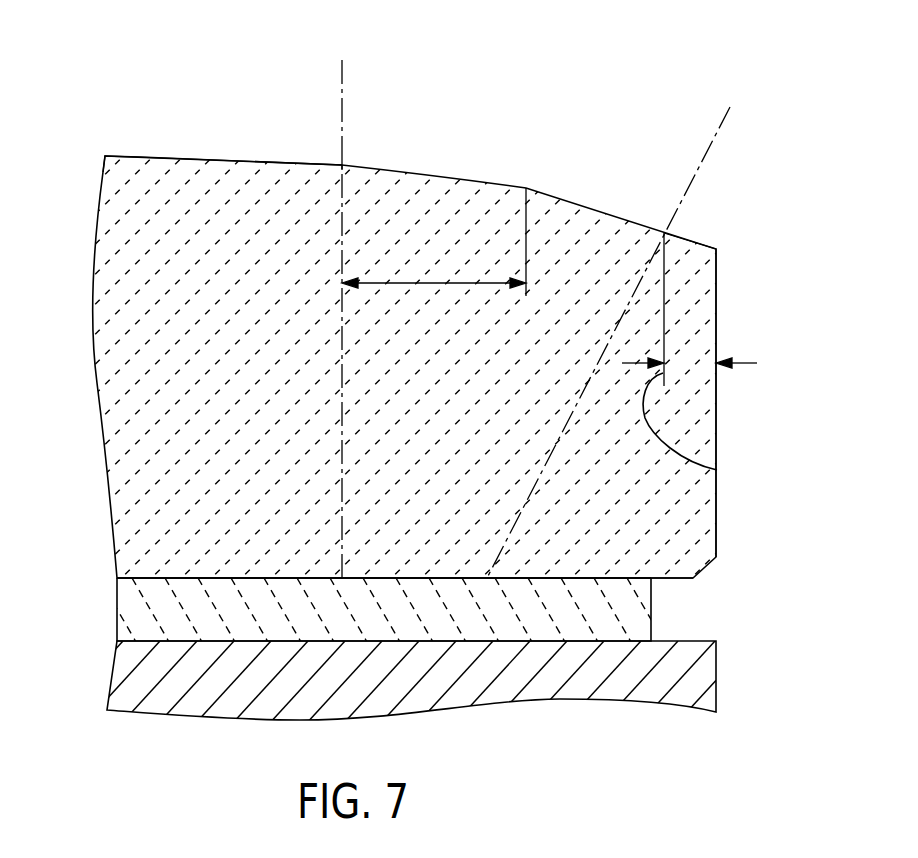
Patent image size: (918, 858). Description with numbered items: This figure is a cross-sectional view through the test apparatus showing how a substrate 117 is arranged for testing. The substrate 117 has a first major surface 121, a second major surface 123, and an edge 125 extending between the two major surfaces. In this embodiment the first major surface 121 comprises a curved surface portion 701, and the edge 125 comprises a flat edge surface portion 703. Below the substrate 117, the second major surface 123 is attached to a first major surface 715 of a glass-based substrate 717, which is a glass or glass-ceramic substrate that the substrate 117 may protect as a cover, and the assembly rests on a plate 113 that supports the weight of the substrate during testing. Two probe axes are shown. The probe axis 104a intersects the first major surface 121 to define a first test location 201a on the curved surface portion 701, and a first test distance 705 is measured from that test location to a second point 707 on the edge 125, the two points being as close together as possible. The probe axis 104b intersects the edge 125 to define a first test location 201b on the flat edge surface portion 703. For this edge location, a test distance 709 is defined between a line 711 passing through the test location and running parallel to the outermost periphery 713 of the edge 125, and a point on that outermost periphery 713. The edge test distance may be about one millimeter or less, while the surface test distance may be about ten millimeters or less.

The probe axis 104a is at (345, 88).
The probe axis 104b is at (712, 150).
The plate 113 is at (717, 645).
The substrate 117 is at (207, 157).
The first major surface 121 is at (133, 155).
The second major surface 123 is at (232, 580).
The edge 125 is at (717, 388).
The first test location 201a is at (343, 165).
The first test location 201b is at (664, 233).
The curved surface portion 701 is at (260, 156).
The flat edge surface portion 703 is at (698, 242).
The first test distance 705 is at (435, 282).
The second point 707 is at (526, 188).
The test distance 709 is at (744, 362).
The line 711 is at (717, 470).
The outermost periphery 713 is at (717, 427).
The first major surface 715 is at (193, 577).
The glass-based substrate 717 is at (130, 602).